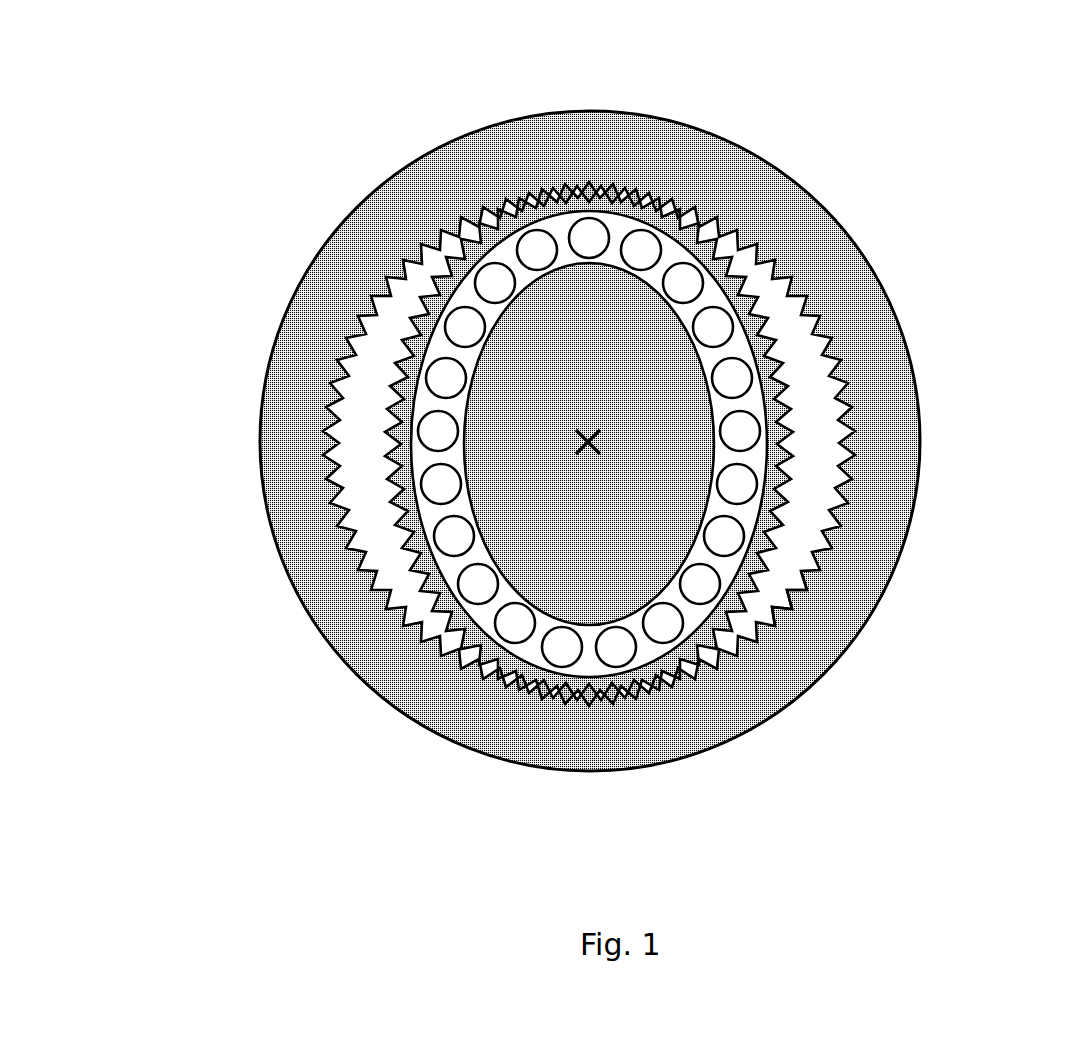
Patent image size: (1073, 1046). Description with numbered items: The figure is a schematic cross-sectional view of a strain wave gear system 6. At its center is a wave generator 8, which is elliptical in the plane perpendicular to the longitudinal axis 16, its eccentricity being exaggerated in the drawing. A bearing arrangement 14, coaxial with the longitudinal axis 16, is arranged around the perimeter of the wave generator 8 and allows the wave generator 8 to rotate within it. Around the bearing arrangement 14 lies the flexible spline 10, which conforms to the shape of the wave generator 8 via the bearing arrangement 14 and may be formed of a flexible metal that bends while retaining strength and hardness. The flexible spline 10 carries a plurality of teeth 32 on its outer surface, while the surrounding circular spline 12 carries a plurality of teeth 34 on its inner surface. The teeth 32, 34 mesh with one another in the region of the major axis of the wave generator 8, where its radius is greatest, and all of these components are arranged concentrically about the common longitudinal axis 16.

The strain wave gear system 6 is at (588, 450).
The wave generator 8 is at (658, 607).
The flexible spline 10 is at (578, 444).
The circular spline 12 is at (607, 410).
The bearing arrangement 14 is at (413, 481).
The longitudinal axis 16 is at (596, 441).
The teeth of the flexible spline 32 is at (683, 222).
The teeth of the circular spline 34 is at (800, 607).